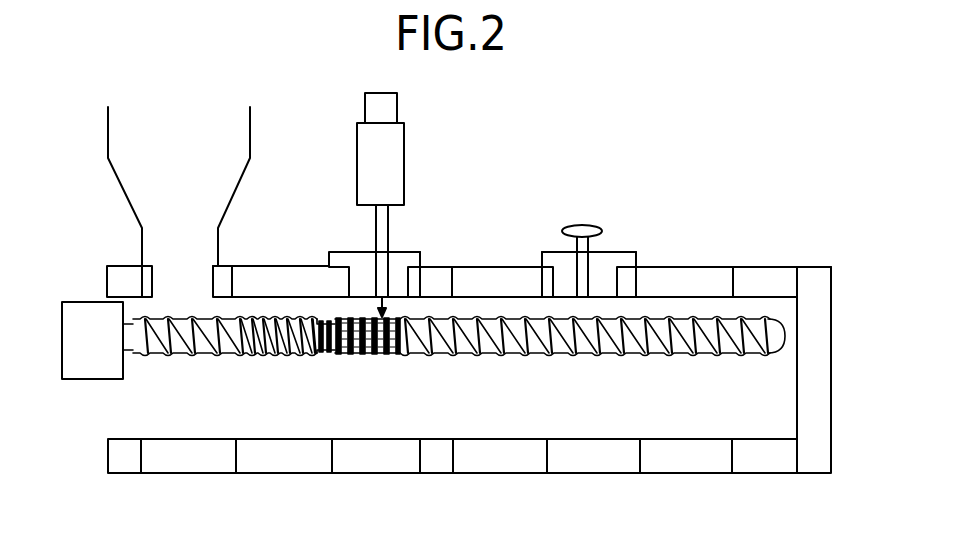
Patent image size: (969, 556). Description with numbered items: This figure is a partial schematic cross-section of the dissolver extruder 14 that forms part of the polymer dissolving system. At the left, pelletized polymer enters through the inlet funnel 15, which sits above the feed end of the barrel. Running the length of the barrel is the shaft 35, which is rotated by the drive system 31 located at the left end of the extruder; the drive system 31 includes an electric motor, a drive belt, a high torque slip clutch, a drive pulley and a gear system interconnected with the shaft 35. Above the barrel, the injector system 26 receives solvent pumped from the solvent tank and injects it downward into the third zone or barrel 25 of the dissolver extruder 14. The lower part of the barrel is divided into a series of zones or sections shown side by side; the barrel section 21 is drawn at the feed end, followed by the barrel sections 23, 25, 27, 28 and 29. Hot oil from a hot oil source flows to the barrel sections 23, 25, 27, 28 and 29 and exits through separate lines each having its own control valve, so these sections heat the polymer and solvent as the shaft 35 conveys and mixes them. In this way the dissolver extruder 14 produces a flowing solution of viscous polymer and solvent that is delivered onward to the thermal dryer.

The dissolver extruder 14 is at (133, 270).
The inlet funnel 15 is at (137, 217).
The first barrel zone 21 is at (177, 430).
The barrel section 23 is at (275, 425).
The third zone or barrel 25 is at (362, 432).
The injector system 26 is at (357, 174).
The barrel section 27 is at (475, 426).
The barrel section 28 is at (563, 431).
The barrel section 29 is at (672, 433).
The drive system 31 is at (84, 365).
The shaft 35 is at (300, 354).